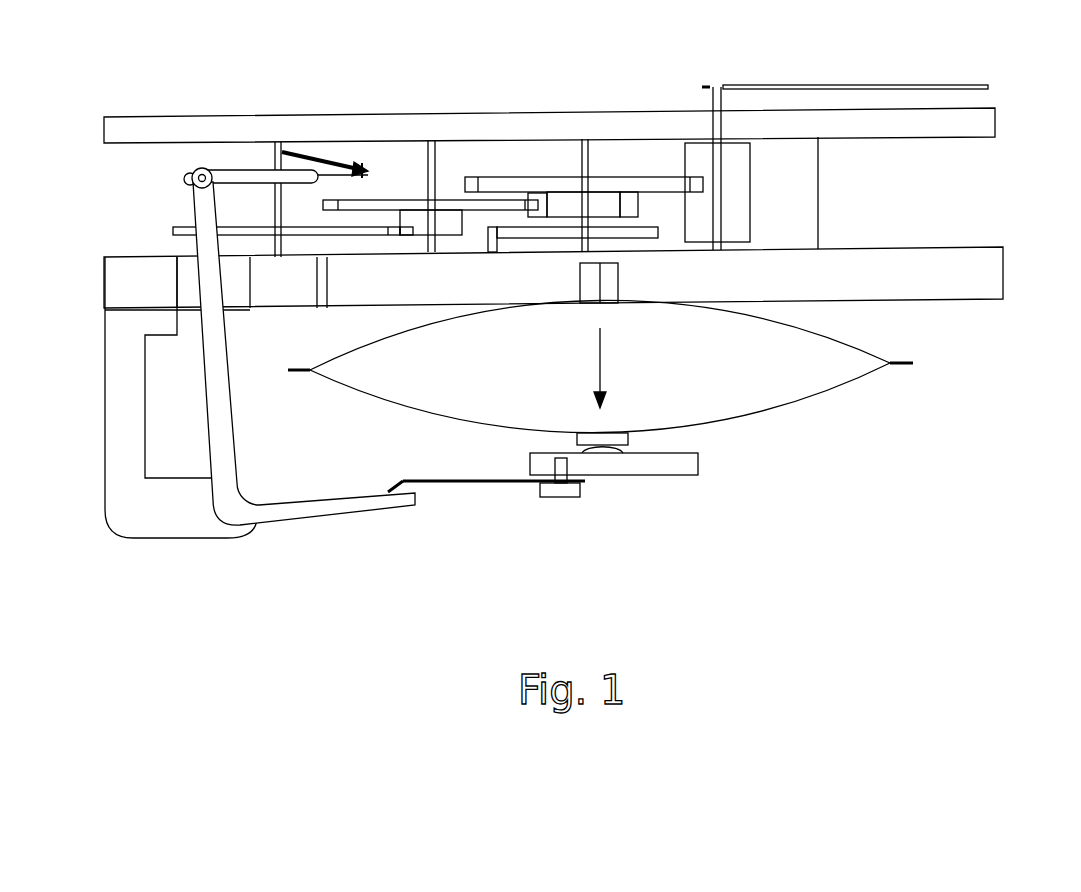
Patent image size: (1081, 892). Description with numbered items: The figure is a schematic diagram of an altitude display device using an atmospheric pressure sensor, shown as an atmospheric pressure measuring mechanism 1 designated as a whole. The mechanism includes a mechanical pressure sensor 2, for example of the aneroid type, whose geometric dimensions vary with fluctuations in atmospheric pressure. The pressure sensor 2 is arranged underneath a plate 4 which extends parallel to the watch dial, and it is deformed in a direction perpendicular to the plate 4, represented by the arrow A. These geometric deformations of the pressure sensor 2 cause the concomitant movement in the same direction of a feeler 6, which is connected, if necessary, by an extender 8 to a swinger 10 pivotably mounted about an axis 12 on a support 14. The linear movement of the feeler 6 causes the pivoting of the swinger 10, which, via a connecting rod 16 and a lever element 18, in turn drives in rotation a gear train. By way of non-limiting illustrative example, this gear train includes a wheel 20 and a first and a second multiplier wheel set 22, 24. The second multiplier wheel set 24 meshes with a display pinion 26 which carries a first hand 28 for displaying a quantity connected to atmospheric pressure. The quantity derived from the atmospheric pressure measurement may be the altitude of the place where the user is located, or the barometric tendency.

The atmospheric pressure measuring mechanism 1 is at (567, 288).
The mechanical pressure sensor 2 is at (600, 366).
The plate 4 is at (948, 260).
The feeler 6 is at (646, 465).
The extender 8 is at (484, 483).
The swinger 10 is at (217, 422).
The axis 12 is at (183, 178).
The support 14 is at (130, 382).
The connecting rod 16 is at (252, 178).
The lever element 18 is at (316, 152).
The wheel 20 is at (304, 262).
The first multiplier wheel set 22 is at (412, 188).
The second multiplier wheel set 24 is at (570, 168).
The display pinion 26 is at (695, 158).
The first hand 28 is at (890, 85).